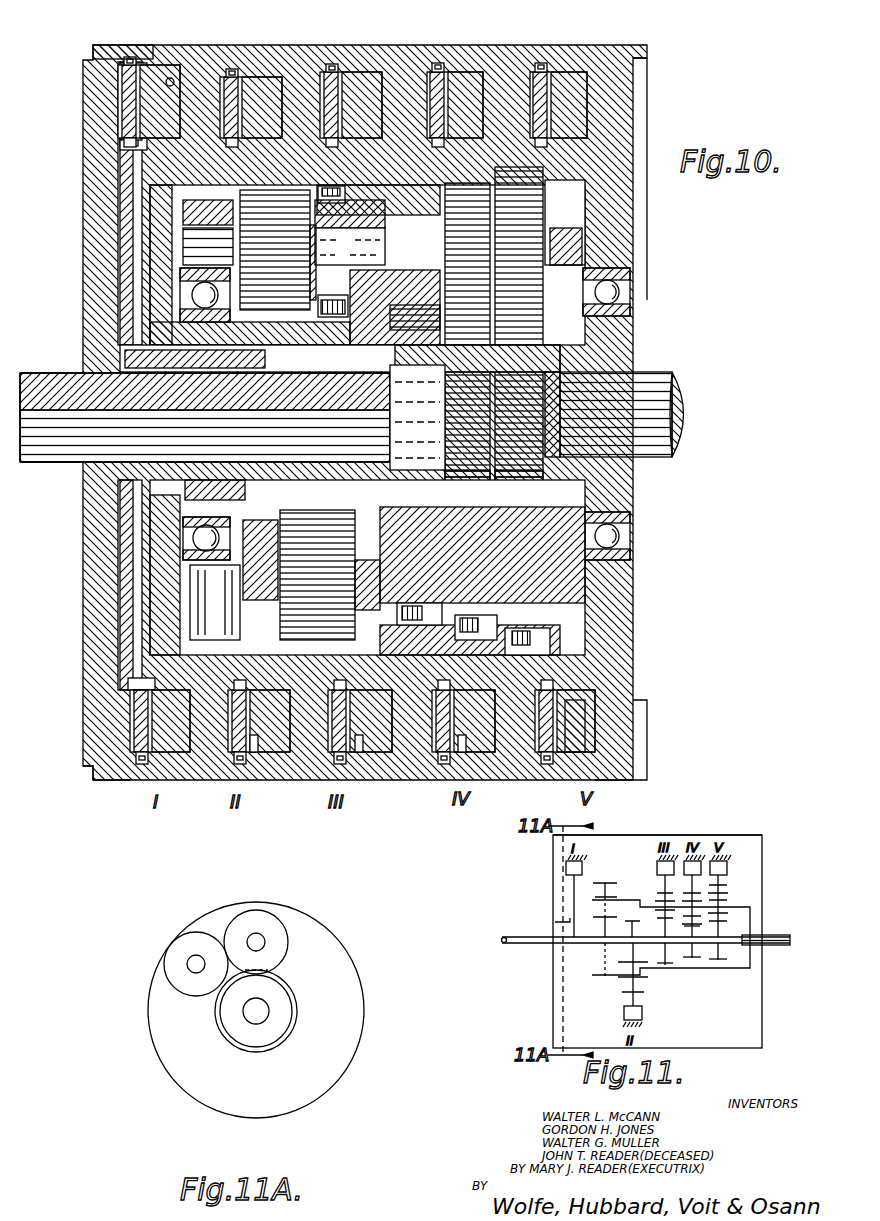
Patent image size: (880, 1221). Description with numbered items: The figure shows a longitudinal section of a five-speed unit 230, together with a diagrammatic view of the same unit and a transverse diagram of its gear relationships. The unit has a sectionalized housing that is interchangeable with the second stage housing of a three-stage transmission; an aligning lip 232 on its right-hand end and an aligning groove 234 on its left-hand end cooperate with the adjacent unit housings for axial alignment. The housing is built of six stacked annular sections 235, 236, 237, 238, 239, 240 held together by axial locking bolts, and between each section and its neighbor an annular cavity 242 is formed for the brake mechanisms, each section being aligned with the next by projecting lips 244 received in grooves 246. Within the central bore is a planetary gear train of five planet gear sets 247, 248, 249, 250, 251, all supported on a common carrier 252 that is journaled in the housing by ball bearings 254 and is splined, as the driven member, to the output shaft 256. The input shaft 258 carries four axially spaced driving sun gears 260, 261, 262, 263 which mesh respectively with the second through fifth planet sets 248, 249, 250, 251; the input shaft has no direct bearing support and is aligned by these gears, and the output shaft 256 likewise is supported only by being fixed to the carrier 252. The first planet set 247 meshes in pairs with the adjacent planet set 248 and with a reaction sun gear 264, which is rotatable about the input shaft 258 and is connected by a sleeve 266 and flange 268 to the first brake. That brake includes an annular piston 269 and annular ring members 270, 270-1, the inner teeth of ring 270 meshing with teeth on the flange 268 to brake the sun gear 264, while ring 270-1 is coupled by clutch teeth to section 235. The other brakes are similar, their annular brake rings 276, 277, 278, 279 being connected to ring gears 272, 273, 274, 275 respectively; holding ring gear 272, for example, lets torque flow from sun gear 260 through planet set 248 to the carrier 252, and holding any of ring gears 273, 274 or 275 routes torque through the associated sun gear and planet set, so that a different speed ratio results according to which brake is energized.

In FIG. 10, the five-speed unit 230 is at (656, 117).
In FIG. 11, the five-speed unit 230 is at (818, 827).
In FIG. 10, the aligning lip 232 is at (648, 768).
In FIG. 10, the aligning groove 234 is at (100, 780).
In FIG. 10, the annular housing section 235 is at (122, 788).
In FIG. 10, the annular housing section 236 is at (210, 782).
In FIG. 10, the annular housing section 237 is at (297, 782).
In FIG. 10, the annular housing section 238 is at (400, 782).
In FIG. 10, the annular housing section 239 is at (508, 782).
In FIG. 10, the annular housing section 240 is at (627, 782).
In FIG. 10, the annular cavity 242 is at (175, 80).
In FIG. 10, the projecting lip 244 is at (152, 50).
In FIG. 10, the groove 246 is at (152, 60).
In FIG. 10, the planet gear set 247 is at (292, 250).
In FIG. 11, the planet gear set 247 is at (600, 890).
In FIG. 11A, the planet gear set 247 is at (282, 930).
In FIG. 10, the planet gear set 248 is at (292, 580).
In FIG. 11, the planet gear set 248 is at (618, 990).
In FIG. 11A, the planet gear set 248 is at (184, 952).
In FIG. 10, the planet gear set 249 is at (398, 315).
In FIG. 11, the planet gear set 249 is at (660, 912).
In FIG. 10, the planet gear set 250 is at (452, 270).
In FIG. 11, the planet gear set 250 is at (700, 925).
In FIG. 10, the planet gear set 251 is at (540, 208).
In FIG. 11, the planet gear set 251 is at (722, 915).
In FIG. 10, the carrier 252 is at (622, 490).
In FIG. 11, the carrier 252 is at (750, 965).
In FIG. 10, the ball bearings 254 is at (192, 295).
In FIG. 10, the output shaft 256 is at (680, 385).
In FIG. 11, the output shaft 256 is at (770, 935).
In FIG. 10, the input shaft 258 is at (40, 455).
In FIG. 11, the input shaft 258 is at (525, 946).
In FIG. 11A, the input shaft 258 is at (254, 1012).
In FIG. 10, the sun gear 260 is at (345, 298).
In FIG. 11, the sun gear 260 is at (610, 967).
In FIG. 11A, the sun gear 260 is at (294, 1032).
In FIG. 10, the sun gear 261 is at (437, 497).
In FIG. 11, the sun gear 261 is at (660, 967).
In FIG. 10, the sun gear 262 is at (490, 475).
In FIG. 11, the sun gear 262 is at (690, 960).
In FIG. 10, the sun gear 263 is at (515, 450).
In FIG. 11, the sun gear 263 is at (717, 962).
In FIG. 10, the reaction sun gear 264 is at (252, 523).
In FIG. 11, the reaction sun gear 264 is at (597, 923).
In FIG. 11A, the reaction sun gear 264 is at (294, 1002).
In FIG. 10, the sleeve 266 is at (130, 368).
In FIG. 10, the flange 268 is at (128, 210).
In FIG. 11, the flange 268 is at (575, 905).
In FIG. 10, the annular piston 269 is at (155, 97).
In FIG. 10, the annular ring member 270 is at (126, 118).
In FIG. 10, the annular ring member 270-1 is at (132, 130).
In FIG. 10, the ring gear 272 is at (340, 192).
In FIG. 11, the ring gear 272 is at (624, 1008).
In FIG. 11A, the ring gear 272 is at (162, 1020).
In FIG. 10, the ring gear 273 is at (440, 612).
In FIG. 11, the ring gear 273 is at (662, 892).
In FIG. 10, the ring gear 274 is at (480, 628).
In FIG. 11, the ring gear 274 is at (690, 895).
In FIG. 10, the ring gear 275 is at (540, 652).
In FIG. 11, the ring gear 275 is at (722, 890).
In FIG. 10, the annular brake ring 276 is at (268, 745).
In FIG. 10, the annular brake ring 277 is at (360, 745).
In FIG. 10, the annular brake ring 278 is at (452, 770).
In FIG. 10, the annular brake ring 279 is at (570, 780).